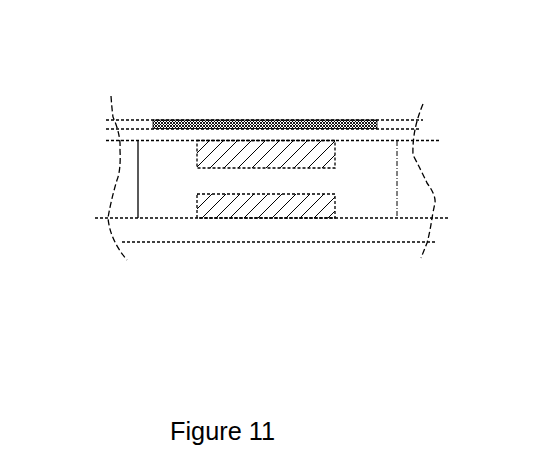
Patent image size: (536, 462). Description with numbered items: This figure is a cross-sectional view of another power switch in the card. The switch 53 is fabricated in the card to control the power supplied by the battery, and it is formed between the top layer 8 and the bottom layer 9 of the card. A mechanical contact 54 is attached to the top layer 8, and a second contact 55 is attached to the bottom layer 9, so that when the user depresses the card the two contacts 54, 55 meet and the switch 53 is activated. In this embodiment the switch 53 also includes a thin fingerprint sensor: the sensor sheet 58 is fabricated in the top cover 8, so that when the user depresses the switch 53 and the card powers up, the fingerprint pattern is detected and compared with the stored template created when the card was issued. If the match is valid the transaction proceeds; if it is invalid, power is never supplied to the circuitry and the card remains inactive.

The top layer 8 is at (402, 128).
The bottom layer 9 is at (272, 230).
The switch 53 is at (150, 183).
The mechanical contact 54 is at (335, 162).
The contact 55 is at (293, 207).
The sensor sheet 58 is at (255, 118).